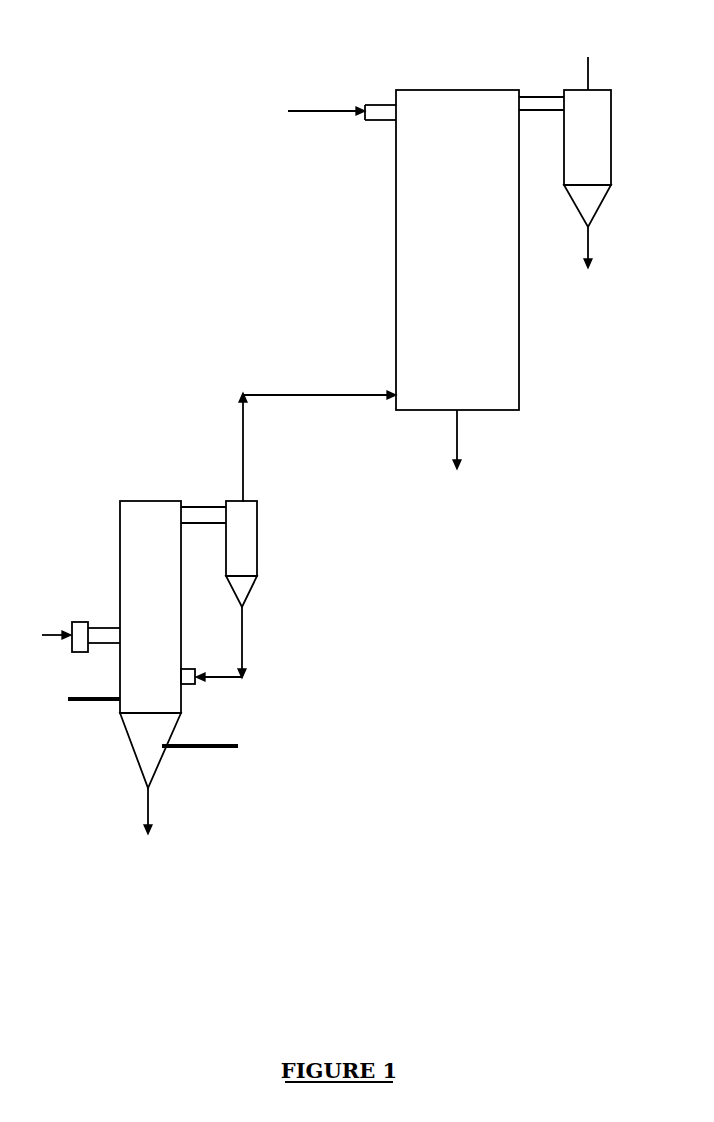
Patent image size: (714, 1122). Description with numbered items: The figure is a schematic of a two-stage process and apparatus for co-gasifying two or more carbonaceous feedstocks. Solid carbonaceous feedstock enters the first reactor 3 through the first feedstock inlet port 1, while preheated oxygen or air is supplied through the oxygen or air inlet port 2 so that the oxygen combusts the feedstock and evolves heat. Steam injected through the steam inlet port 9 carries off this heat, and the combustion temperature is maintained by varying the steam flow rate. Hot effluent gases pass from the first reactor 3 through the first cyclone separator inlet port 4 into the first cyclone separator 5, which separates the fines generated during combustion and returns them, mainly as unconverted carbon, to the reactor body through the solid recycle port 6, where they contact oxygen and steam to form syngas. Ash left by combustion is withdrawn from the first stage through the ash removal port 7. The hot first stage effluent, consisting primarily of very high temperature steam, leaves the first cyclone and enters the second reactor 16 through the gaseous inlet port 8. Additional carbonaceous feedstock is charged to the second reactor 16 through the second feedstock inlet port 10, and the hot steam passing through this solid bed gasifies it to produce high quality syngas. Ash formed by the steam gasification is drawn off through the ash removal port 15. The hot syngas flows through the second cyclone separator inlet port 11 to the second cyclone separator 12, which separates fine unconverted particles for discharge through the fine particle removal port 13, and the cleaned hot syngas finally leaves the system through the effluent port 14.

The first feedstock inlet port 1 is at (67, 637).
The oxygen or air inlet port 2 is at (217, 746).
The first reactor 3 is at (150, 644).
The first cyclone separator inlet port 4 is at (202, 506).
The first cyclone separator 5 is at (250, 552).
The solid recycle port 6 is at (197, 688).
The ash removal port 7 is at (147, 826).
The gaseous inlet port 8 is at (278, 392).
The steam inlet port 9 is at (83, 698).
The second feedstock inlet port 10 is at (326, 112).
The second cyclone separator inlet port 11 is at (542, 94).
The second cyclone separator 12 is at (600, 145).
The fine particle removal port 13 is at (590, 261).
The effluent port 14 is at (587, 52).
The ash removal port 15 is at (457, 454).
The second reactor 16 is at (457, 250).